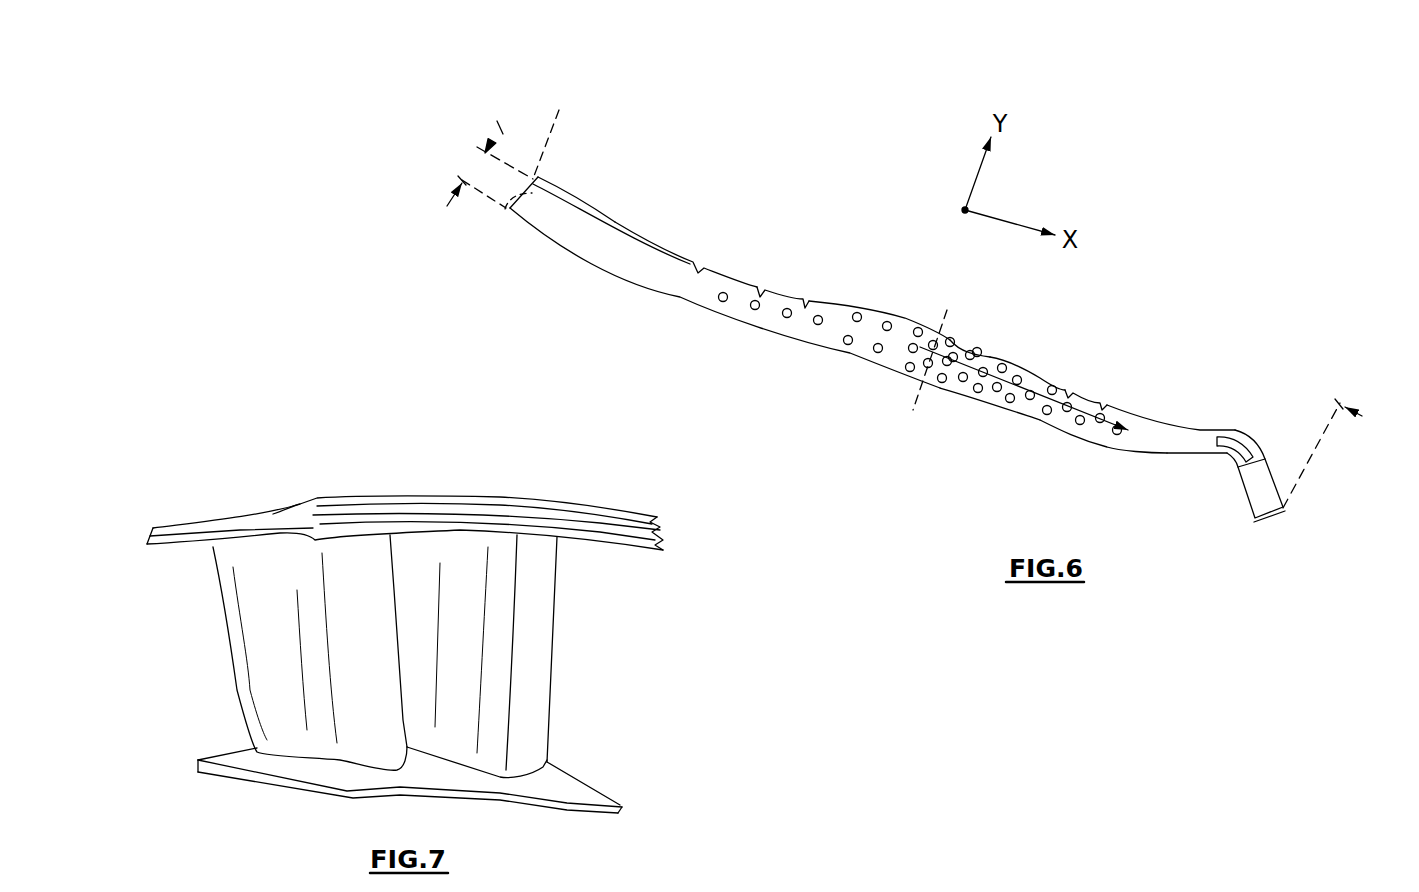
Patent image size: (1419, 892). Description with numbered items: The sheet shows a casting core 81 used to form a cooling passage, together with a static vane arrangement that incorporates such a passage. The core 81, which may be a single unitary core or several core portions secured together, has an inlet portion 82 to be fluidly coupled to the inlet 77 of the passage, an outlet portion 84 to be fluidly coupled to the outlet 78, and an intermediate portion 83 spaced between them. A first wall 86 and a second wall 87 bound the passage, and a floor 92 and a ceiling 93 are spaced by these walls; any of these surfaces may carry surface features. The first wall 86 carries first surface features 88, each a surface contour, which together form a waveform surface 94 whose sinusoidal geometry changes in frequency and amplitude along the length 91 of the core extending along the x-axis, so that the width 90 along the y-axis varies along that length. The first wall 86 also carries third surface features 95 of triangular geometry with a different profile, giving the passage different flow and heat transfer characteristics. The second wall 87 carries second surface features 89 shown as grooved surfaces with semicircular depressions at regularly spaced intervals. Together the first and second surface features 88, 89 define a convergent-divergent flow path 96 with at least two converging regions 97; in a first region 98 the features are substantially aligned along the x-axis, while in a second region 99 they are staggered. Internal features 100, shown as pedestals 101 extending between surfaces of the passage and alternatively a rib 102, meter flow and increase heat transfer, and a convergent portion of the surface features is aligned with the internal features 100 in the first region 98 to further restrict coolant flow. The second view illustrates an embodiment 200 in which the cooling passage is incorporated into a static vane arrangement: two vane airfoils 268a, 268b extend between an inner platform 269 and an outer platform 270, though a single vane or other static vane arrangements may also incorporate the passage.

In FIG. 6, the inlet 77 is at (505, 209).
In FIG. 6, the outlet 78 is at (1271, 522).
In FIG. 6, the core 81 is at (1177, 265).
In FIG. 6, the inlet portion 82 is at (633, 236).
In FIG. 6, the intermediate portion 83 is at (873, 297).
In FIG. 6, the outlet portion 84 is at (1193, 426).
In FIG. 6, the first wall 86 is at (578, 207).
In FIG. 6, the second wall 87 is at (563, 248).
In FIG. 6, the first surface features 88 is at (1065, 390).
In FIG. 6, the second surface features 89 is at (1060, 424).
In FIG. 6, the width 90 is at (500, 127).
In FIG. 6, the length 91 is at (555, 114).
In FIG. 6, the floor 92 is at (553, 182).
In FIG. 6, the ceiling 93 is at (540, 212).
In FIG. 6, the waveform surface 94 is at (1010, 350).
In FIG. 6, the third surface features 95 is at (755, 286).
In FIG. 6, the convergent-divergent flow path 96 is at (1003, 388).
In FIG. 6, the converging regions 97 is at (954, 330).
In FIG. 6, the first region 98 is at (912, 392).
In FIG. 6, the second region 99 is at (1040, 459).
In FIG. 6, the internal features 100 is at (1234, 434).
In FIG. 6, the pedestals 101 is at (861, 314).
In FIG. 6, the rib 102 is at (1258, 440).
In FIG. 7, the embodiment 200 is at (664, 603).
In FIG. 7, the vane airfoil 268a is at (274, 717).
In FIG. 7, the vane airfoil 268b is at (490, 723).
In FIG. 7, the inner platform 269 is at (611, 807).
In FIG. 7, the outer platform 270 is at (610, 518).